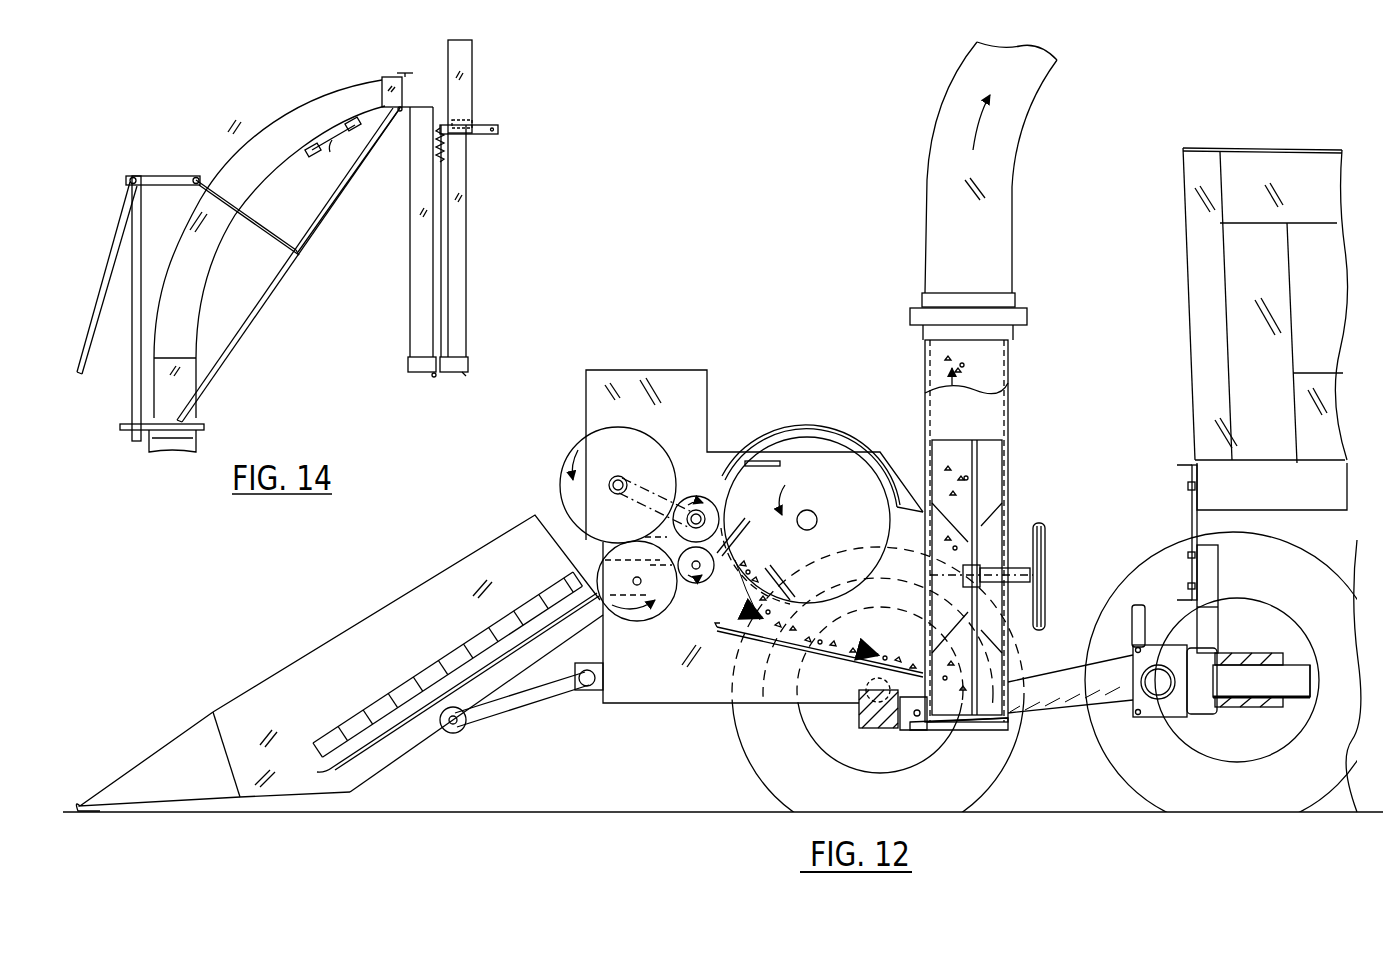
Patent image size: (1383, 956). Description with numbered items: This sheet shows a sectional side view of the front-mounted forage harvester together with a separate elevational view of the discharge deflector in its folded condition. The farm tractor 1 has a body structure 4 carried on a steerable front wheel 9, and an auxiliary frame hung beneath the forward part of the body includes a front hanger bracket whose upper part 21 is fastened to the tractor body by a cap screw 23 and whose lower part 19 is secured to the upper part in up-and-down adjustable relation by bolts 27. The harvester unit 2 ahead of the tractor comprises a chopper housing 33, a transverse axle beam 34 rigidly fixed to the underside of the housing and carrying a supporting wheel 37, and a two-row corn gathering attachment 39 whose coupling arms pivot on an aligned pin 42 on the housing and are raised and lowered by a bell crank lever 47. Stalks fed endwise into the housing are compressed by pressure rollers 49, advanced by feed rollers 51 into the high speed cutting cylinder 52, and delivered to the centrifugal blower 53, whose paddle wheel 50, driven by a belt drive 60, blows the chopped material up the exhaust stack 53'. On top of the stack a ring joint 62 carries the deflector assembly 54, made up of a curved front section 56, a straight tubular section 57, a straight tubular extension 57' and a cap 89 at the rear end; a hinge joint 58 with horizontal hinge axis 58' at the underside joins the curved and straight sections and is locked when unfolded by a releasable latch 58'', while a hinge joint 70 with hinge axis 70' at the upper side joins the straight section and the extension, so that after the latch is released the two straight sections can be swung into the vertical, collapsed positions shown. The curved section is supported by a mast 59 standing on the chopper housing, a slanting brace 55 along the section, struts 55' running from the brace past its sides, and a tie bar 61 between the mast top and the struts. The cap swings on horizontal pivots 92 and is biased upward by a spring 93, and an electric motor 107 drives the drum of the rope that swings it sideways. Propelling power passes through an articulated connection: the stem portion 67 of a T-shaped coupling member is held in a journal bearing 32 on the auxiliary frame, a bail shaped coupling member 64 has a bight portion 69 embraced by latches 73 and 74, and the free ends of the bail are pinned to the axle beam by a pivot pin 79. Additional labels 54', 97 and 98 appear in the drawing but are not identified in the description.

In FIG. 12, the farm tractor 1 is at (1247, 134).
In FIG. 12, the harvester unit 2 is at (714, 352).
In FIG. 12, the body structure 4 is at (1310, 496).
In FIG. 12, the front wheel 9 is at (1123, 777).
In FIG. 12, the lower part of front hanger bracket 19 is at (1213, 592).
In FIG. 12, the upper part of front hanger bracket 21 is at (1191, 507).
In FIG. 12, the cap screw 23 is at (1188, 485).
In FIG. 12, the bolts 27 is at (1188, 585).
In FIG. 12, the journal bearing 32 is at (1250, 708).
In FIG. 12, the chopper housing 33 is at (705, 412).
In FIG. 12, the transverse axle beam 34 is at (872, 728).
In FIG. 12, the supporting wheel 37 is at (973, 790).
In FIG. 12, the corn gathering attachment 39 is at (356, 623).
In FIG. 12, the pin 42 is at (606, 550).
In FIG. 12, the bell crank lever 47 is at (522, 702).
In FIG. 12, the pressure rollers 49 is at (647, 443).
In FIG. 12, the paddle wheel 50 is at (958, 627).
In FIG. 12, the feed rollers 51 is at (682, 500).
In FIG. 12, the cutting cylinder 52 is at (830, 460).
In FIG. 12, the centrifugal blower 53 is at (985, 535).
In FIG. 12, the exhaust stack 53' is at (1029, 350).
In FIG. 14, the deflector assembly 54 is at (516, 216).
In FIG. 12, the deflector assembly 54 is at (958, 191).
In FIG. 12, the adjusting shaft 54' is at (1008, 590).
In FIG. 14, the slanting brace 55 is at (287, 265).
In FIG. 14, the struts 55' is at (246, 188).
In FIG. 14, the curved front section 56 is at (272, 131).
In FIG. 14, the straight tubular section 57 is at (402, 239).
In FIG. 14, the straight tubular extension 57' is at (481, 248).
In FIG. 14, the hinge joint 58 is at (379, 77).
In FIG. 14, the horizontal hinge axis 58' is at (399, 136).
In FIG. 14, the releasable latch 58'' is at (411, 48).
In FIG. 14, the mast 59 is at (140, 207).
In FIG. 12, the belt drive 60 is at (1046, 553).
In FIG. 14, the tie bar 61 is at (166, 176).
In FIG. 14, the ring joint 62 is at (196, 428).
In FIG. 12, the bail shaped coupling member 64 is at (1068, 716).
In FIG. 12, the stem portion 67 is at (1300, 690).
In FIG. 12, the bight portion 69 is at (1140, 683).
In FIG. 14, the hinge joint 70 is at (482, 382).
In FIG. 14, the horizontal hinge axis 70' is at (446, 396).
In FIG. 12, the latch 73 is at (1158, 712).
In FIG. 12, the latch 74 is at (1136, 622).
In FIG. 12, the pivot pin 79 is at (913, 716).
In FIG. 14, the cap 89 is at (476, 77).
In FIG. 14, the horizontal pivots 92 is at (466, 127).
In FIG. 14, the spring 93 is at (451, 150).
In FIG. 14, the pin 97 is at (328, 154).
In FIG. 14, the rod 98 is at (362, 150).
In FIG. 14, the electric motor 107 is at (308, 161).